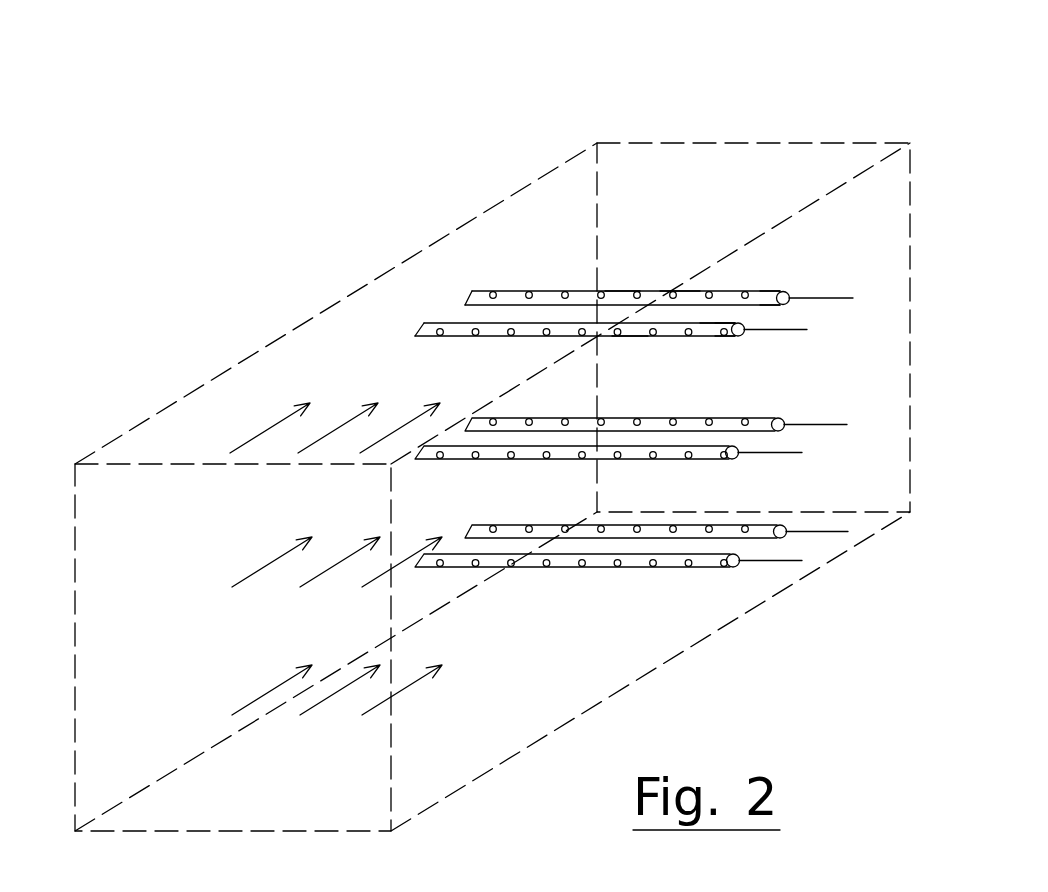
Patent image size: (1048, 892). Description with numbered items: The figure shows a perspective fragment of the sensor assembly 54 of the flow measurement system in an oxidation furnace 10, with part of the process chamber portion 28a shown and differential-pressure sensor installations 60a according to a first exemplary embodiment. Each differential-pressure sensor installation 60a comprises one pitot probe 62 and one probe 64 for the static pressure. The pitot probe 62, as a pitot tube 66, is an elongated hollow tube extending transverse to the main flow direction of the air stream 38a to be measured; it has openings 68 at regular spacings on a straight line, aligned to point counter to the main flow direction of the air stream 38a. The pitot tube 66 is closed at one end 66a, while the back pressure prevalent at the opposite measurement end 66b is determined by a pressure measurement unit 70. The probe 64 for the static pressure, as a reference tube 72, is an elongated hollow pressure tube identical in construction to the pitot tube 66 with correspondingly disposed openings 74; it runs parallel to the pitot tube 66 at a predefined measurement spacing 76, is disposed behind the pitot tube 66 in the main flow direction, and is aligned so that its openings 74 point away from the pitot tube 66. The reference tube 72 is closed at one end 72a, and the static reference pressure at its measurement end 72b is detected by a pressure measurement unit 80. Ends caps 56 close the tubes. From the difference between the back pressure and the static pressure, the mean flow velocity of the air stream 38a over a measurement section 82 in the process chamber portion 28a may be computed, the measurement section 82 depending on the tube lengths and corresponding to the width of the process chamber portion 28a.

The oxidation furnace 10 is at (289, 134).
The process chamber portion 28a is at (548, 194).
The air stream 38a is at (265, 418).
The sensor assembly 54 is at (620, 576).
The end cap 56 is at (810, 289).
The differential-pressure sensor installation 60a is at (428, 310).
The pitot probe 62 is at (630, 339).
The probe for the static pressure 64 is at (623, 288).
The pitot tube 66 is at (560, 337).
The closed end of the pitot tube 66a is at (417, 332).
The measurement end of the pitot tube 66b is at (733, 337).
The openings 68 is at (480, 337).
The pressure measurement unit 70 is at (807, 329).
The reference tube 72 is at (581, 291).
The closed end of the reference tube 72a is at (465, 298).
The measurement end of the reference tube 72b is at (773, 291).
The openings 74 is at (537, 292).
The measurement spacing 76 is at (754, 315).
The pressure measurement unit 80 is at (850, 298).
The measurement section 82 is at (681, 288).